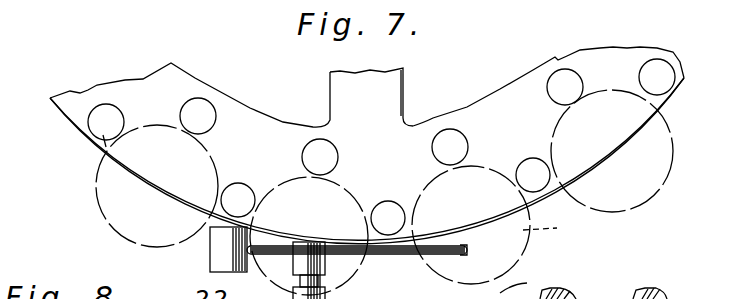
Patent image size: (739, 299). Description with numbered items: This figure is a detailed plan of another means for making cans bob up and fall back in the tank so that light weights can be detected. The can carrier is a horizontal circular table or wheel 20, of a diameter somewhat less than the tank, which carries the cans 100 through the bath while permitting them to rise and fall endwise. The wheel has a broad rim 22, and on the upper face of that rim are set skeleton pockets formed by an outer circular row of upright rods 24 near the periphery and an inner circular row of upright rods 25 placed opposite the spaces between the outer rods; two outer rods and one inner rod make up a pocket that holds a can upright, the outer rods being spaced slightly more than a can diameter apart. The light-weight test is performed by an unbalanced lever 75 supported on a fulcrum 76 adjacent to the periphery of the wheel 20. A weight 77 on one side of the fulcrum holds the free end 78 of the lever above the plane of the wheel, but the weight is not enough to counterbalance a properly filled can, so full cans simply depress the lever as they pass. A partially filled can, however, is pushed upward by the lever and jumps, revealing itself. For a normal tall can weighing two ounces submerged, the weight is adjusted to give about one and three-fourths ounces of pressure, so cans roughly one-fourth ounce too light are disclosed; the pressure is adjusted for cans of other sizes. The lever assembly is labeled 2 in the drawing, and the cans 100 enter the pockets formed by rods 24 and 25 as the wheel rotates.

The table plate 2 is at (367, 139).
The circular table or wheel 20 is at (403, 97).
The rim 22 is at (242, 120).
The upright rods of the outer row 24 is at (215, 213).
The upright rods of the inner row 25 is at (310, 153).
The unbalanced lever 75 is at (357, 267).
The fulcrum 76 is at (352, 270).
The weight 77 is at (222, 259).
The free end 78 is at (467, 247).
The cans 100 is at (607, 207).